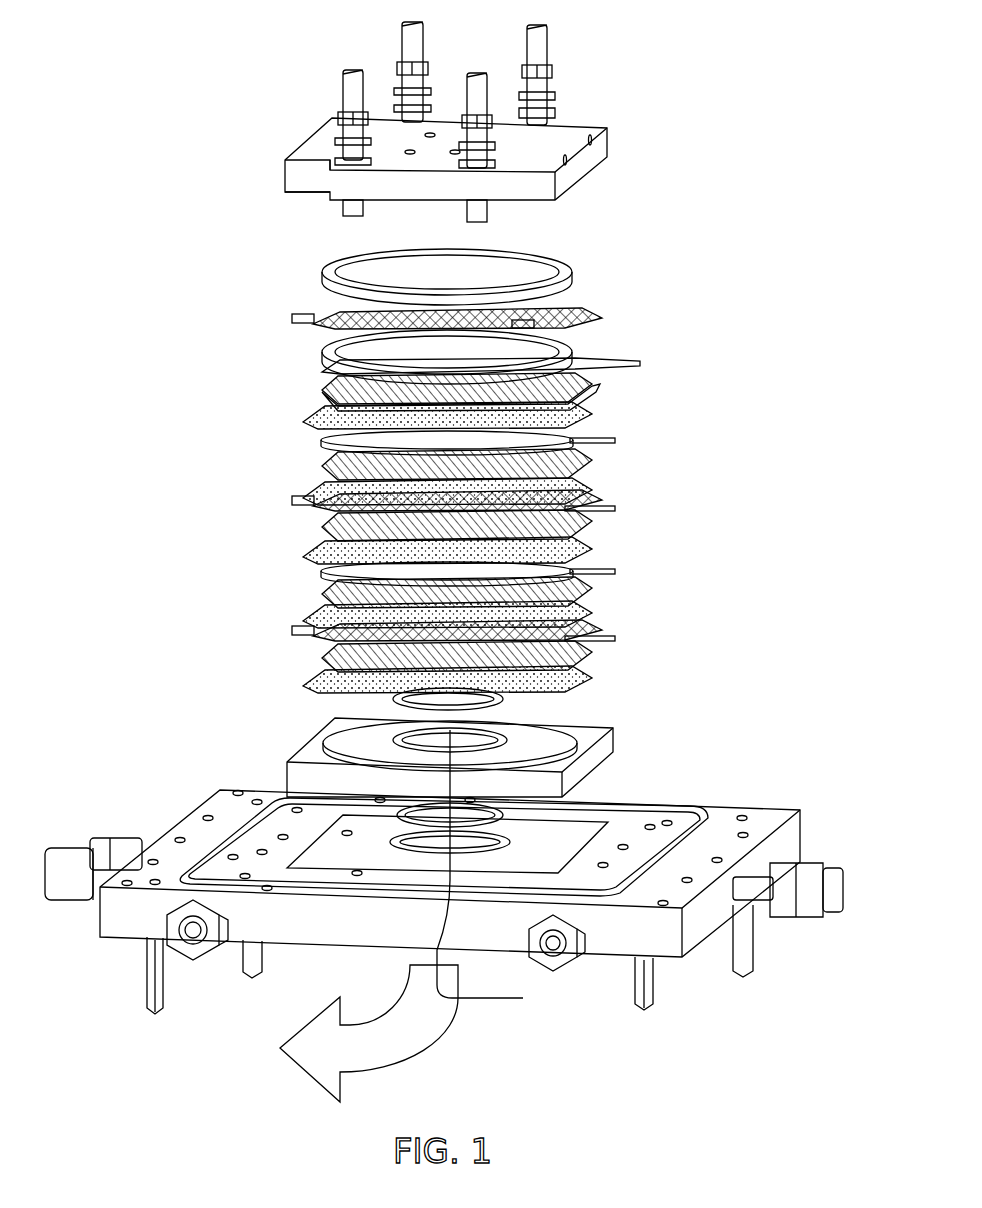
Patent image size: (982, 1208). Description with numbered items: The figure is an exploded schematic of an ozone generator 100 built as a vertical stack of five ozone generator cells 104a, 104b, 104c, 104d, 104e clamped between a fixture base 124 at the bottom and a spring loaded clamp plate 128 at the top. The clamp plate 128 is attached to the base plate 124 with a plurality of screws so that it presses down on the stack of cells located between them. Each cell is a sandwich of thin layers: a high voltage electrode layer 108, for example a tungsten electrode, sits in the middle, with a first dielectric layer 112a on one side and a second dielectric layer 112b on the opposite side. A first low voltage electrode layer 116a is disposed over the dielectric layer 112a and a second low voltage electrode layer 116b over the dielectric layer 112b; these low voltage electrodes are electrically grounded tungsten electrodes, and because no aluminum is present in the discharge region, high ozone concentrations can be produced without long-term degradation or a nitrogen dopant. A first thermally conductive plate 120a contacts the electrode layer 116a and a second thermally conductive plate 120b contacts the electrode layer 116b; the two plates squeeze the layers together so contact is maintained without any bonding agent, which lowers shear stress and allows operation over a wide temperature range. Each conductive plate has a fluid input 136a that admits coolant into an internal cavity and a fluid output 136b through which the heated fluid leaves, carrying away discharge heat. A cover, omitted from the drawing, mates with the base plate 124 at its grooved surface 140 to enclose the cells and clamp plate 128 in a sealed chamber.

The ozone generator 100 is at (444, 562).
The ozone generator cell 104a is at (432, 325).
The ozone generator cell 104b is at (272, 428).
The ozone generator cell 104c is at (272, 495).
The ozone generator cell 104d is at (272, 560).
The ozone generator cell 104e is at (272, 625).
The high voltage electrode layer 108 is at (501, 365).
The first dielectric layer 112a is at (570, 340).
The second dielectric layer 112b is at (600, 383).
The first low voltage electrode layer 116a is at (446, 278).
The second low voltage electrode layer 116b is at (322, 388).
The first thermally conductive plate 120a is at (585, 278).
The second thermally conductive plate 120b is at (577, 409).
The fixture base 124 is at (642, 858).
The spring loaded clamp plate 128 is at (607, 147).
The fluid input 136a is at (292, 318).
The fluid output 136b is at (522, 326).
The grooved surface 140 is at (613, 815).